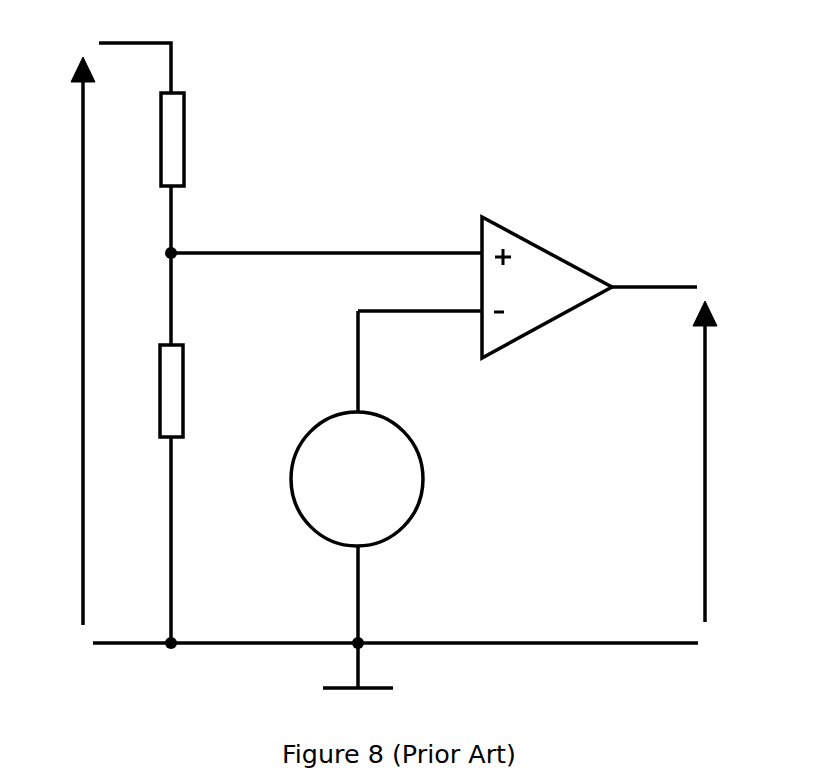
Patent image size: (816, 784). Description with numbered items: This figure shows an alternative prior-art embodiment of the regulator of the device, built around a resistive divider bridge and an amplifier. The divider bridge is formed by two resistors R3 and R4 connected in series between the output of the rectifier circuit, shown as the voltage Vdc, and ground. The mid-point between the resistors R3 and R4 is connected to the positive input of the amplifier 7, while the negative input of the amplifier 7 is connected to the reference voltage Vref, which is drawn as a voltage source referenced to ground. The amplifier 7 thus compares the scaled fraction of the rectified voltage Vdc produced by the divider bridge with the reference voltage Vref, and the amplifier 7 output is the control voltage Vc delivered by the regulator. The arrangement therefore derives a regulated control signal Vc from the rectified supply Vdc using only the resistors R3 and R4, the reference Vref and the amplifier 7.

The resistor R3 is at (193, 139).
The resistor R4 is at (191, 391).
The amplifier 7 is at (535, 268).
The reference voltage Vref is at (357, 479).
The DC voltage Vdc is at (61, 341).
The control voltage output Vc is at (718, 461).